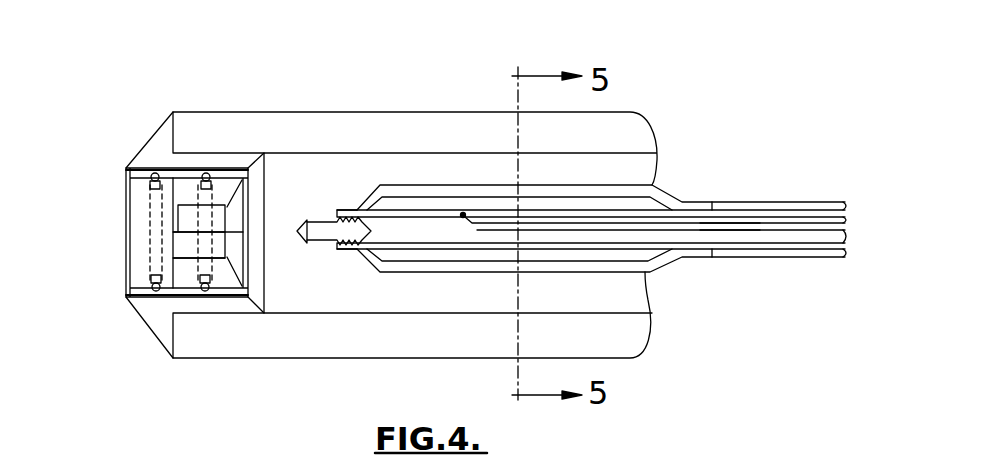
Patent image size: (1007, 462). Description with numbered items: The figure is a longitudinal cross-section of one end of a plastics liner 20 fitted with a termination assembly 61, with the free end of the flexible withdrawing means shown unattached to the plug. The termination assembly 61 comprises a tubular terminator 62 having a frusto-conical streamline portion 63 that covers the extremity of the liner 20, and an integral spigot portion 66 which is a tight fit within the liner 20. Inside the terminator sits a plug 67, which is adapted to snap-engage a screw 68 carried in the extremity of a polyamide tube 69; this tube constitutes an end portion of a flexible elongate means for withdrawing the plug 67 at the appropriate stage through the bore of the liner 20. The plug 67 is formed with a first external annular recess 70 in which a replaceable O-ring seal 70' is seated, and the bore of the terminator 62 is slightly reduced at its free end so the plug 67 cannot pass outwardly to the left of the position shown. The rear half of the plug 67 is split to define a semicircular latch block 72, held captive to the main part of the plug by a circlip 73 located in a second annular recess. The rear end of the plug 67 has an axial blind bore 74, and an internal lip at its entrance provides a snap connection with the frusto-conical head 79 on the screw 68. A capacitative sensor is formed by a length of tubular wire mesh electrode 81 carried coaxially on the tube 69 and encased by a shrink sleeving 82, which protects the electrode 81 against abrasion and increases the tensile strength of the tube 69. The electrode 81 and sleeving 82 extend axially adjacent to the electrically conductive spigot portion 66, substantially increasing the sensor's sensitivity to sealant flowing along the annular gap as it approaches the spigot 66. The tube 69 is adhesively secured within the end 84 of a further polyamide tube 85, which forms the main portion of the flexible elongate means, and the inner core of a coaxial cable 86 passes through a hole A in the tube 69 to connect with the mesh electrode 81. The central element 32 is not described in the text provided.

The liner 20 is at (600, 120).
The central conductor 32 is at (726, 231).
The termination assembly 61 is at (169, 213).
The tubular terminator 62 is at (163, 323).
The frusto-conical streamline portion 63 is at (142, 140).
The spigot portion 66 is at (220, 303).
The plug 67 is at (138, 240).
The screw 68 is at (345, 150).
The polyamide tube 69 is at (349, 252).
The first external annular recess 70 is at (108, 242).
The O-ring seal 70' is at (108, 187).
The semicircular latch block 72 is at (232, 163).
The circlip 73 is at (206, 173).
The axial blind bore 74 is at (187, 250).
The frusto-conical head 79 is at (304, 226).
The electrode 81 is at (562, 295).
The shrink sleeving 82 is at (413, 265).
The end of further polyamide tube 84 is at (728, 202).
The further polyamide tube 85 is at (812, 202).
The coaxial cable 86 is at (847, 233).
The hole A is at (462, 213).